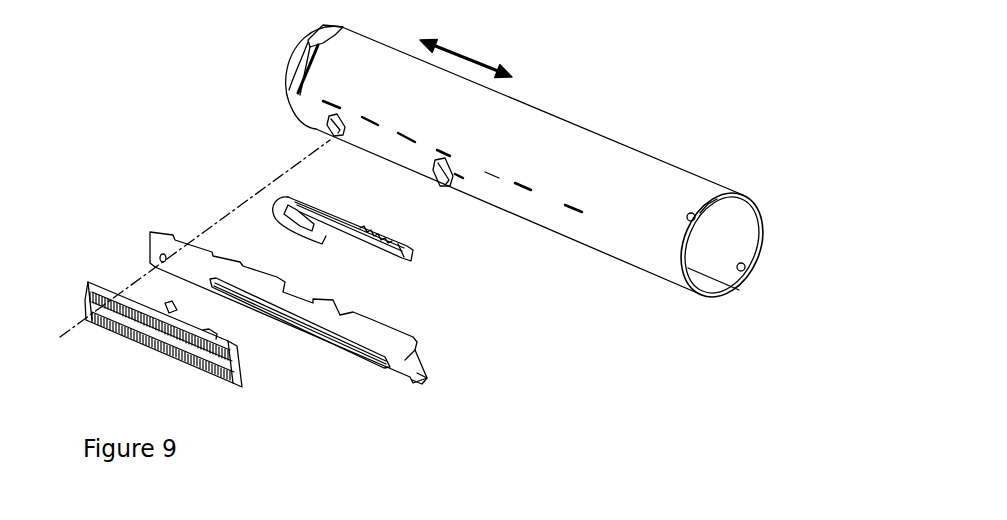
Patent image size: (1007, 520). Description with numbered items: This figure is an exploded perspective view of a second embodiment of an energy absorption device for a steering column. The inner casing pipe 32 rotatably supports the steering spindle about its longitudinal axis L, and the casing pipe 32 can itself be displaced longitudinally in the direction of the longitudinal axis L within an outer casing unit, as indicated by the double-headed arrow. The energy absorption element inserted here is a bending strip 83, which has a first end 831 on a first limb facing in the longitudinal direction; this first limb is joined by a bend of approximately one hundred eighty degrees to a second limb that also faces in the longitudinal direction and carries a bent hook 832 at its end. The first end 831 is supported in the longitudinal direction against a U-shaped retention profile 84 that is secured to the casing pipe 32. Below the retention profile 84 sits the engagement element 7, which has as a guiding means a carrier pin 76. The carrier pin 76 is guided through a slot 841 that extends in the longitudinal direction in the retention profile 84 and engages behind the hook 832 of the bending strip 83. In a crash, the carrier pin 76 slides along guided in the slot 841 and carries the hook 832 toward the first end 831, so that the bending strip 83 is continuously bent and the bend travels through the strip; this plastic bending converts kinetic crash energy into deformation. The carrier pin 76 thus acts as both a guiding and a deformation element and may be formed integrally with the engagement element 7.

The casing pipe 32 is at (617, 162).
The longitudinal axis L is at (480, 62).
The bending strip 83 is at (365, 205).
The first end 831 is at (413, 257).
The hook 832 is at (332, 238).
The retention profile 84 is at (291, 334).
The slot 841 is at (370, 352).
The engagement element 7 is at (173, 331).
The carrier pin 76 is at (167, 306).